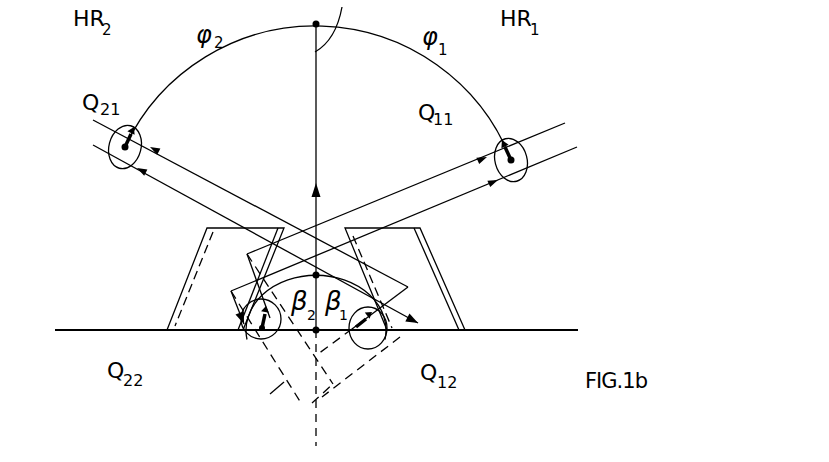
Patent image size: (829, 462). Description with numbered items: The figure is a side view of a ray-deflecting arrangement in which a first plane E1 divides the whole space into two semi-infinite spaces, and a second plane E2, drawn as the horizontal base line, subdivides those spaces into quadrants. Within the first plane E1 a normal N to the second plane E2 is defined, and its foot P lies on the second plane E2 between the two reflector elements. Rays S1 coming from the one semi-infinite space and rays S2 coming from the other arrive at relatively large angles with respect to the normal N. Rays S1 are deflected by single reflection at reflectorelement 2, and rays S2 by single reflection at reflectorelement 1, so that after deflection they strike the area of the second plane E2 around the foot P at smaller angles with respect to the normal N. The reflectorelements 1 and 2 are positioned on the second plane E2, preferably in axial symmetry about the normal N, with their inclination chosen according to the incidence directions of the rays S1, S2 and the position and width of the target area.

The reflectorelement 1 is at (430, 287).
The reflectorelement 2 is at (205, 276).
The foot of the normal P is at (316, 331).
The normal N is at (328, 234).
The first plane E1 is at (340, 26).
The second plane E2 is at (316, 314).
The rays S1 is at (512, 175).
The rays S2 is at (128, 165).